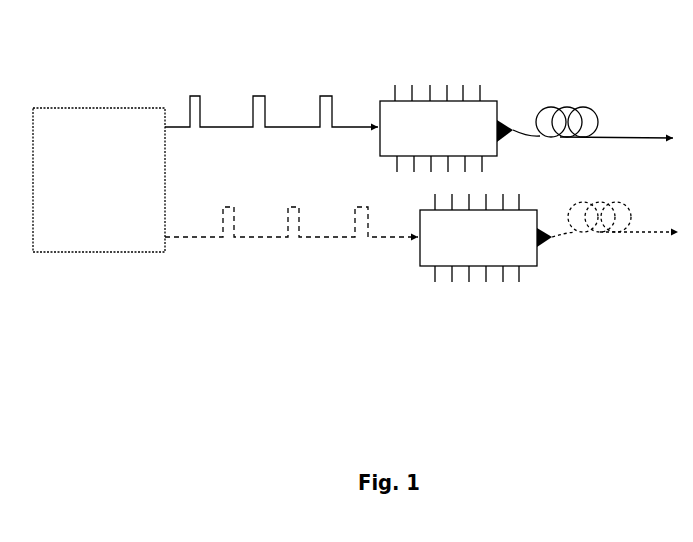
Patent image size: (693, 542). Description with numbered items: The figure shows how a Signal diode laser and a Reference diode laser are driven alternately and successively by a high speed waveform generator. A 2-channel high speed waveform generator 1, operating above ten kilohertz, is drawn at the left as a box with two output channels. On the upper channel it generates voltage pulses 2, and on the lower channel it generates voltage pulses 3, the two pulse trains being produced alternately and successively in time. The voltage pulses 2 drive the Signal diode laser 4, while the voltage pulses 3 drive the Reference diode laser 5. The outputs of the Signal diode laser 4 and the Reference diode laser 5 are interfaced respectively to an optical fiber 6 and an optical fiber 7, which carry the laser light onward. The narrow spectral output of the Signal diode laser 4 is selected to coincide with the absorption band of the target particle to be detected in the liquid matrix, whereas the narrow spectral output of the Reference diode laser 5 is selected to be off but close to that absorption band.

The 2-channel high speed waveform generator 1 is at (100, 125).
The voltage pulses 2 is at (318, 85).
The voltage pulses 3 is at (243, 213).
The Signal diode laser 4 is at (453, 118).
The Reference diode laser 5 is at (490, 250).
The optical fiber 6 is at (585, 98).
The optical fiber 7 is at (600, 243).